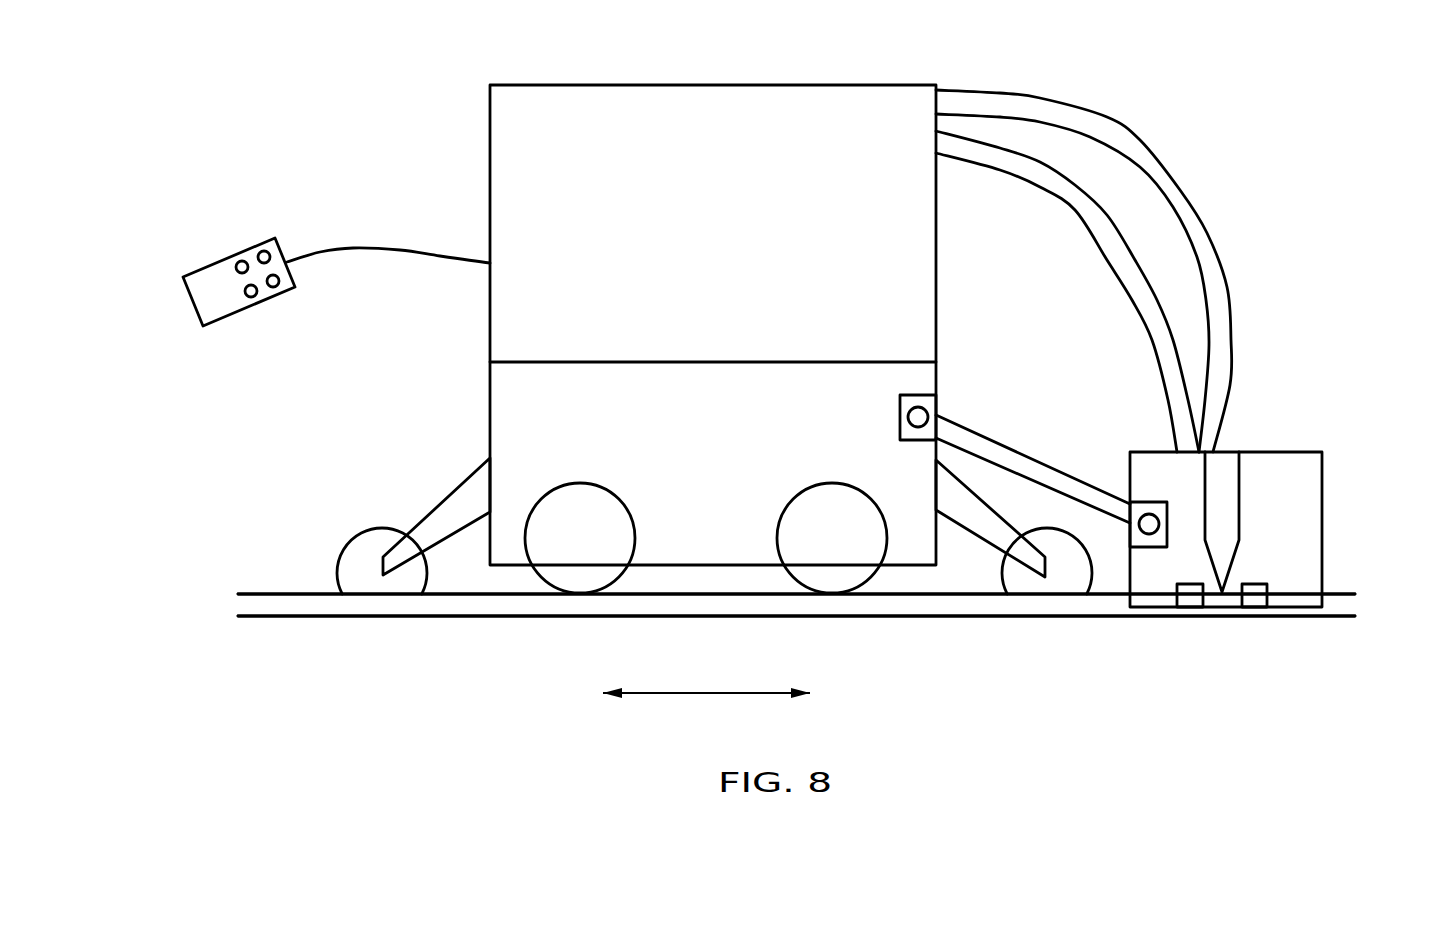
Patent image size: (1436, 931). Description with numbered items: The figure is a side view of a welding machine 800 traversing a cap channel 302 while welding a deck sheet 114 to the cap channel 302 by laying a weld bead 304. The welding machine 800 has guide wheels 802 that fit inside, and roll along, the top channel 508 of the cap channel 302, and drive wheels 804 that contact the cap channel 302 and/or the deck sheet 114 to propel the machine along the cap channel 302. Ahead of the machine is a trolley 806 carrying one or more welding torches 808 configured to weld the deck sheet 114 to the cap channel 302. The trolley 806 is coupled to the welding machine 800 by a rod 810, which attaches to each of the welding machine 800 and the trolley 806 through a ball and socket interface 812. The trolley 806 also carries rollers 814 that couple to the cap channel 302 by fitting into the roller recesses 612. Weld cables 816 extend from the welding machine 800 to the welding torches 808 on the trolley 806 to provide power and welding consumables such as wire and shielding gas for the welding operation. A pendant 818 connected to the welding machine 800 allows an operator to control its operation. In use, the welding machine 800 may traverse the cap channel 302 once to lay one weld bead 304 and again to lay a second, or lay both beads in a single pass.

The welding machine 800 is at (738, 70).
The pendant 818 is at (232, 257).
The weld cables 816 is at (1183, 191).
The ball and socket interface 812 is at (900, 417).
The rod 810 is at (1034, 459).
The trolley 806 is at (1262, 452).
The welding torch 808 is at (1240, 495).
The rollers 814 is at (1253, 600).
The drive wheels 804 is at (638, 538).
The guide wheels 802 is at (421, 574).
The deck sheet 114 is at (250, 617).
The cap channel 302 is at (267, 593).
The weld bead 304 is at (355, 617).
The top channel 508 is at (293, 586).
The roller recesses 612 is at (1366, 603).